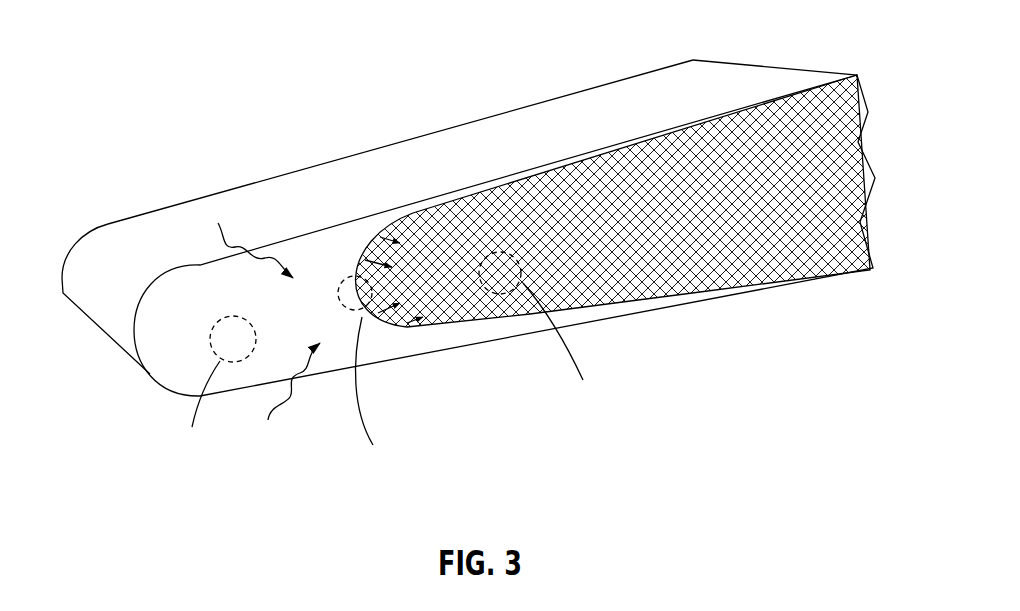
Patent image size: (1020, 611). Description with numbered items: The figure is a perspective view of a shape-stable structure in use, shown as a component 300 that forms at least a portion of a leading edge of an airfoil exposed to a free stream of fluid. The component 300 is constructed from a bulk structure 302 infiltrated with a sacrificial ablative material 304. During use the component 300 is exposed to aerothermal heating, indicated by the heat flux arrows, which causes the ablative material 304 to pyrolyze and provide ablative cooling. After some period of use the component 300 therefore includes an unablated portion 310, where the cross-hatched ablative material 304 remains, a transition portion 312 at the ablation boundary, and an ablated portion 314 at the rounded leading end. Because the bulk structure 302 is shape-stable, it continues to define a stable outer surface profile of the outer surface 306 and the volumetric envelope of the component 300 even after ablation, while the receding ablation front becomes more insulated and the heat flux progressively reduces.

The component 300 is at (398, 105).
The bulk structure 302 is at (183, 222).
The sacrificial ablative material 304 is at (632, 157).
The outer surface 306 is at (325, 175).
The unablated portion 310 is at (732, 260).
The transition portion 312 is at (380, 318).
The ablated portion 314 is at (163, 357).